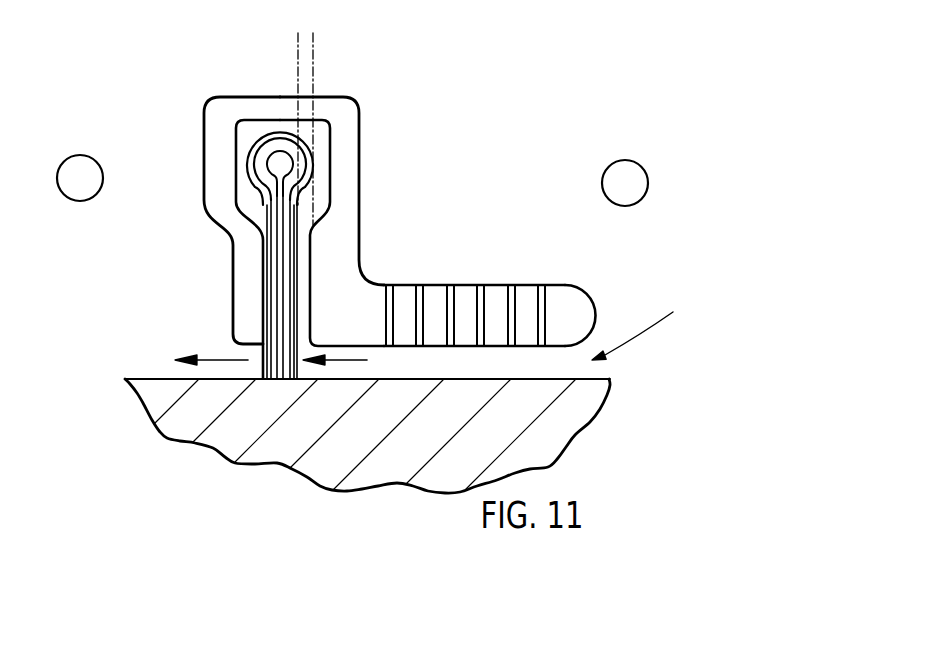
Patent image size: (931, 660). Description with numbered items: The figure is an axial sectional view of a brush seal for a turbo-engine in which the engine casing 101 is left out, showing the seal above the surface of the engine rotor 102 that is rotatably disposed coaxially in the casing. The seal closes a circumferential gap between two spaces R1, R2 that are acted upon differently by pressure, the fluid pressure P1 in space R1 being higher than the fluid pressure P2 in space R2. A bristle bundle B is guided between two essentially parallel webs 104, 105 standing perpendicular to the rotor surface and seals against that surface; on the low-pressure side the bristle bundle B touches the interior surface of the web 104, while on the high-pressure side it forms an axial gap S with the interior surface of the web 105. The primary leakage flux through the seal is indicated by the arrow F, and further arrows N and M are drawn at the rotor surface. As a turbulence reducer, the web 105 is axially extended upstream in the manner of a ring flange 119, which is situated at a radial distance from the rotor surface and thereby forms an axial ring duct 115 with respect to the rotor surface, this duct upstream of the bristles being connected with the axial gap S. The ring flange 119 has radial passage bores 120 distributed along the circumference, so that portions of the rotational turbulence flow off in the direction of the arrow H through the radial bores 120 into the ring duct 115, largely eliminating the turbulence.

The engine casing 101 is at (494, 251).
The engine rotor 102 is at (560, 420).
The web 104 is at (247, 262).
The web 105 is at (333, 268).
The axial ring duct 115 is at (480, 347).
The ring flange 119 is at (563, 308).
The radial passage bores 120 is at (422, 284).
The axial gap S is at (325, 60).
The bristle bundle B is at (277, 325).
The primary leakage flux F is at (215, 358).
The normal force direction N is at (343, 362).
The movement direction M is at (658, 333).
The flow direction arrow H is at (517, 270).
The space R1 is at (613, 148).
The space R2 is at (98, 139).
The fluid pressure P1 is at (625, 183).
The fluid pressure P2 is at (80, 178).